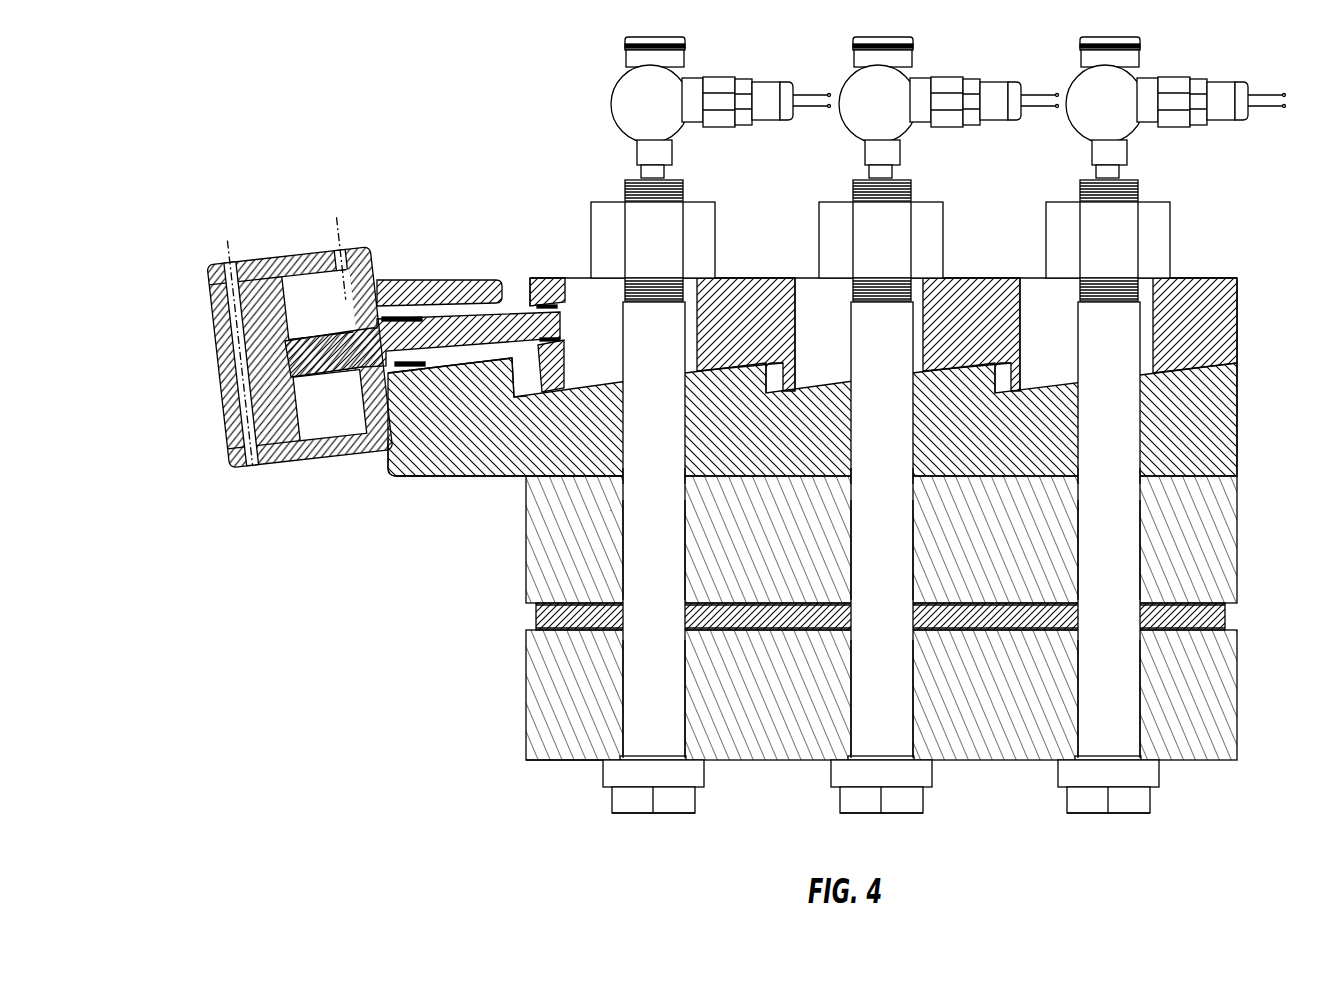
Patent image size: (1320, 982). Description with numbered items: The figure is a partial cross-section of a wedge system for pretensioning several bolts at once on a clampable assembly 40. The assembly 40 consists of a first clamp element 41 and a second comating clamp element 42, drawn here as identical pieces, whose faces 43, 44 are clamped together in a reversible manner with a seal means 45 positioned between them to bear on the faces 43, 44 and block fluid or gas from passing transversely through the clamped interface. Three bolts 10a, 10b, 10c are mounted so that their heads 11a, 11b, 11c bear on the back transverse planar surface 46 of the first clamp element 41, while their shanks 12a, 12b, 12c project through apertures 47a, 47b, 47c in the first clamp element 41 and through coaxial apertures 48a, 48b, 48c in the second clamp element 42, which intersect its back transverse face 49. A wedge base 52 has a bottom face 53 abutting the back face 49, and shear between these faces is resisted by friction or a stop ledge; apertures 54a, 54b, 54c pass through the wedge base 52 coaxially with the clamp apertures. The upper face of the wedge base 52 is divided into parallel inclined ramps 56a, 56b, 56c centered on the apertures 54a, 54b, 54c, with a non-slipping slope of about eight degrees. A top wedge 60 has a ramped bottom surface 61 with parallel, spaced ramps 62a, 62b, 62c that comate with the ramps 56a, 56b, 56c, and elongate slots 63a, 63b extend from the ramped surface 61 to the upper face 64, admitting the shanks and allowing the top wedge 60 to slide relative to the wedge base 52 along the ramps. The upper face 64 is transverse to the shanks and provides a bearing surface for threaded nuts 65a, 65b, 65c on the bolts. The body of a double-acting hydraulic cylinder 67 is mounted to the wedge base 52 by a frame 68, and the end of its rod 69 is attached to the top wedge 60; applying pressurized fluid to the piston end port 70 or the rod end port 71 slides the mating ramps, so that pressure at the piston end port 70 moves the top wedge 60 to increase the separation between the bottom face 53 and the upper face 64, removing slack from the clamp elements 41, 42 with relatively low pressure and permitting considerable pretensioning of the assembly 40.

The bolt 10a is at (630, 815).
The bolt 10b is at (858, 815).
The bolt 10c is at (1085, 815).
The bolt head 11a is at (612, 793).
The bolt head 11b is at (840, 793).
The bolt head 11c is at (1067, 793).
The bolt shank 12a is at (618, 752).
The bolt shank 12b is at (846, 752).
The bolt shank 12c is at (1073, 752).
The clampable assembly 40 is at (738, 446).
The first clamp element 41 is at (527, 705).
The second comating clamp element 42 is at (527, 573).
The face 43 is at (536, 630).
The face 44 is at (536, 607).
The seal means 45 is at (536, 617).
The back transverse planar surface 46 is at (530, 760).
The aperture 47a is at (684, 723).
The aperture 47b is at (912, 723).
The aperture 47c is at (1140, 723).
The aperture 48a is at (623, 581).
The aperture 48b is at (851, 581).
The aperture 48c is at (1141, 581).
The back transverse face 49 is at (527, 475).
The wedge base 52 is at (398, 458).
The bottom face 53 is at (450, 477).
The aperture 54a is at (625, 466).
The aperture 54b is at (853, 466).
The aperture 54c is at (1140, 464).
The inclined ramp 56a is at (697, 370).
The inclined ramp 56b is at (925, 370).
The inclined ramp 56c is at (1153, 368).
The top wedge 60 is at (1237, 301).
The bottom surface 61 is at (1220, 367).
The ramp 62a is at (708, 372).
The ramp 62b is at (936, 372).
The ramp 62c is at (1175, 373).
The elongate slot 63a is at (566, 298).
The elongate slot 63b is at (798, 294).
The upper face 64 is at (1192, 277).
The threaded nut 65a is at (591, 222).
The threaded nut 65b is at (819, 222).
The threaded nut 65c is at (1046, 222).
The double-acting hydraulic cylinder 67 is at (275, 468).
The frame 68 is at (415, 278).
The rod 69 is at (368, 355).
The piston end port 70 is at (232, 262).
The rod end port 71 is at (341, 249).